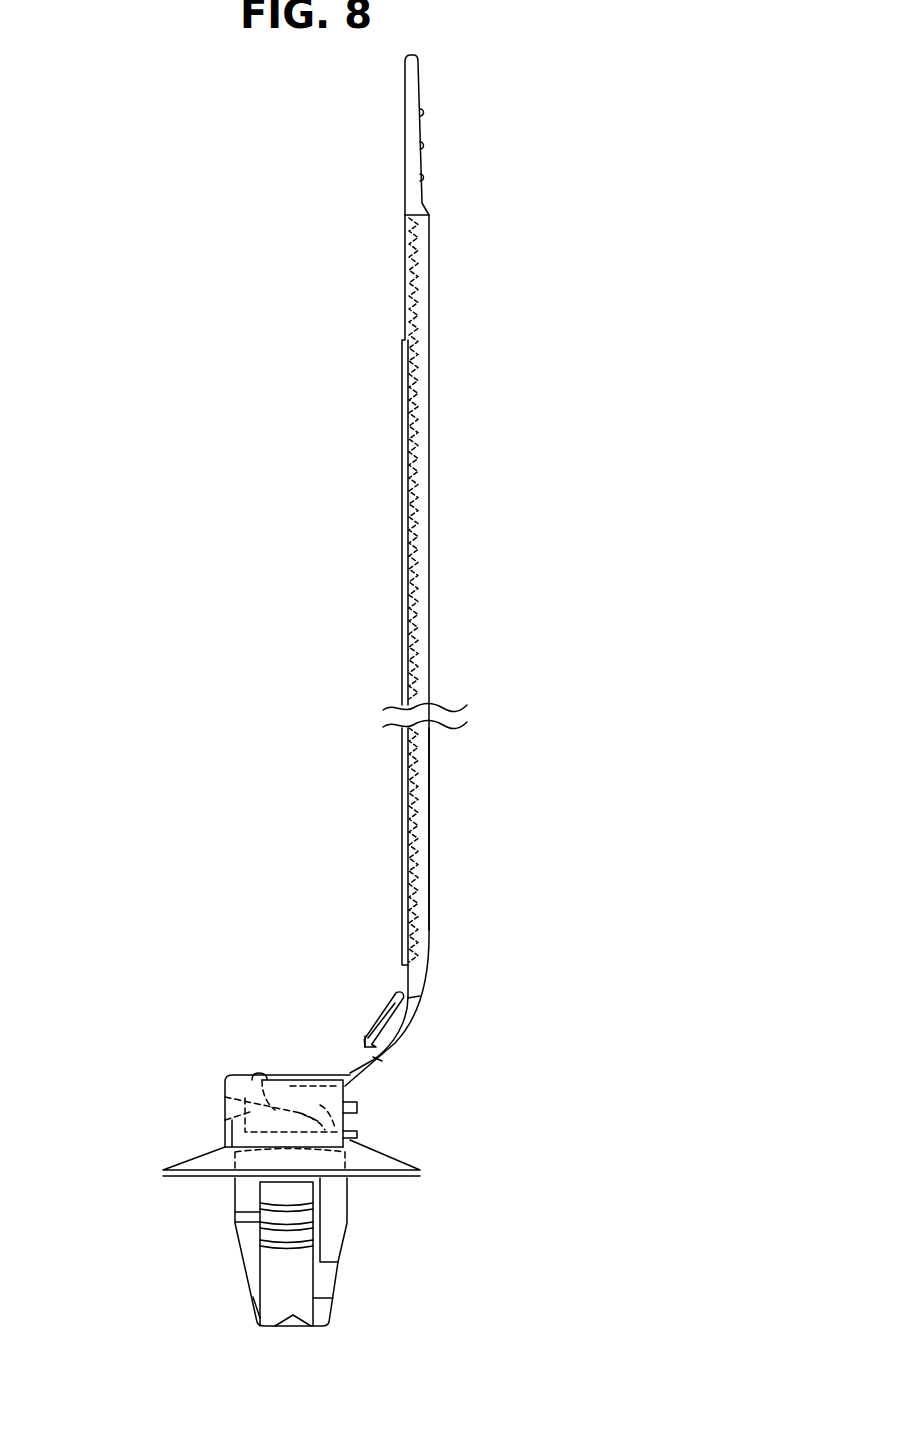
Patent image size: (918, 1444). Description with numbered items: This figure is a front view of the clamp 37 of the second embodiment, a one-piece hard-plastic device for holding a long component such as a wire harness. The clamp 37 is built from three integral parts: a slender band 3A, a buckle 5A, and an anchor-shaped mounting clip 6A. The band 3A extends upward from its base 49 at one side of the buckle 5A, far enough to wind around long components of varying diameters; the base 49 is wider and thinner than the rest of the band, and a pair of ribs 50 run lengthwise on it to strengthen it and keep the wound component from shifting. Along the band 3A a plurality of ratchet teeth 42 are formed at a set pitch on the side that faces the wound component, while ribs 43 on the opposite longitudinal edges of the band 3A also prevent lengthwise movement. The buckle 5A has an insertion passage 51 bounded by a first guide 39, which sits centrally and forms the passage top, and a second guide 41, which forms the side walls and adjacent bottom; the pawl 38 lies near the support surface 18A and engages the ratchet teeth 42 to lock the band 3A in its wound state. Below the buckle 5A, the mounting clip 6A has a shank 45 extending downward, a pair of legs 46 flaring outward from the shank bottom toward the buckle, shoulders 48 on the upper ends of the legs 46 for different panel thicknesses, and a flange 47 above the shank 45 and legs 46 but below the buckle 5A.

The clamp 37 is at (365, 710).
The band 3A is at (429, 570).
The ratchet teeth 42 is at (425, 462).
The ribs 43 is at (405, 498).
The base 49 is at (407, 1019).
The ribs 50 is at (385, 1022).
The buckle 5A is at (287, 1080).
The support surface 18A is at (297, 1072).
The first guide 39 is at (263, 1075).
The insertion passage 51 is at (225, 1095).
The second guide 41 is at (225, 1120).
The pawl 38 is at (345, 1092).
The flange 47 is at (390, 1160).
The mounting clip 6A is at (279, 1271).
The shank 45 is at (250, 1193).
The shoulders 48 is at (275, 1232).
The legs 46 is at (290, 1270).